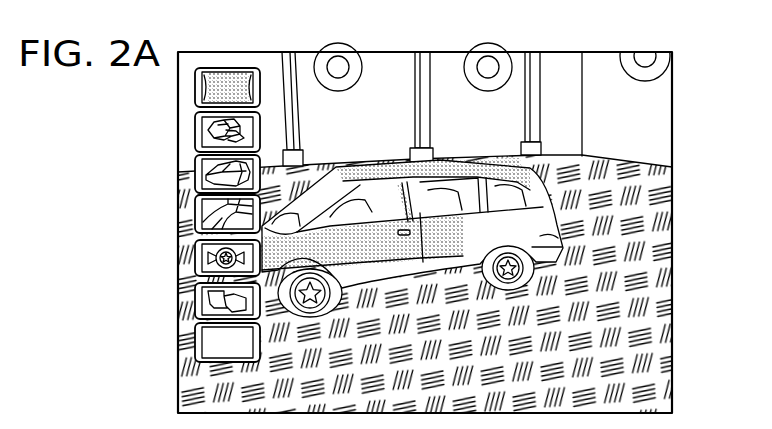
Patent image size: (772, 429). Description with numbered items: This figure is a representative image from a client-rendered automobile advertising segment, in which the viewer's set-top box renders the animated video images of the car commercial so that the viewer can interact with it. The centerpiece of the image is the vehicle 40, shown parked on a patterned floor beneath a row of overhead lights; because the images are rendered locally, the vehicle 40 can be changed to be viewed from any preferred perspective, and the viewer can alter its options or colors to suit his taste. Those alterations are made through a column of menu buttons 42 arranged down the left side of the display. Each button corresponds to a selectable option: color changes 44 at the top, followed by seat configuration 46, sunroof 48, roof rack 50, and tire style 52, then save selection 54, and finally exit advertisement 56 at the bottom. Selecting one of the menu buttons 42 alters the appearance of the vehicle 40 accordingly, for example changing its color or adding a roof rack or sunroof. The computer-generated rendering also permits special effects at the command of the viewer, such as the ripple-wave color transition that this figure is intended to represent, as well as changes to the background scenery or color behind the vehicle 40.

The vehicle 40 is at (553, 231).
The menu buttons 42 is at (199, 187).
The color changes 44 is at (207, 89).
The seat configuration 46 is at (207, 125).
The sunroof 48 is at (207, 163).
The roof rack 50 is at (207, 203).
The tire style 52 is at (207, 255).
The save selection 54 is at (207, 305).
The exit advertisement 56 is at (207, 337).